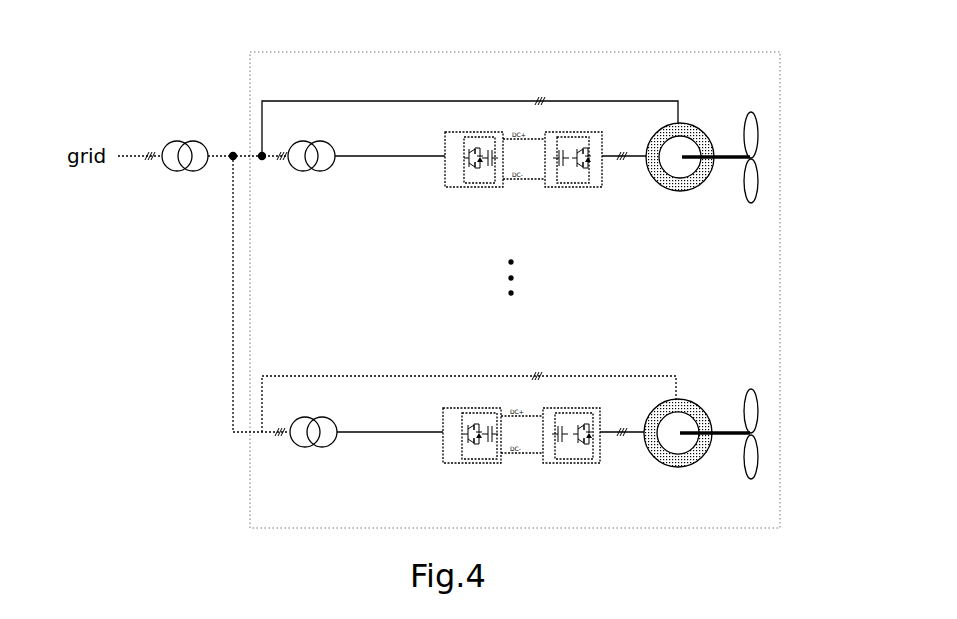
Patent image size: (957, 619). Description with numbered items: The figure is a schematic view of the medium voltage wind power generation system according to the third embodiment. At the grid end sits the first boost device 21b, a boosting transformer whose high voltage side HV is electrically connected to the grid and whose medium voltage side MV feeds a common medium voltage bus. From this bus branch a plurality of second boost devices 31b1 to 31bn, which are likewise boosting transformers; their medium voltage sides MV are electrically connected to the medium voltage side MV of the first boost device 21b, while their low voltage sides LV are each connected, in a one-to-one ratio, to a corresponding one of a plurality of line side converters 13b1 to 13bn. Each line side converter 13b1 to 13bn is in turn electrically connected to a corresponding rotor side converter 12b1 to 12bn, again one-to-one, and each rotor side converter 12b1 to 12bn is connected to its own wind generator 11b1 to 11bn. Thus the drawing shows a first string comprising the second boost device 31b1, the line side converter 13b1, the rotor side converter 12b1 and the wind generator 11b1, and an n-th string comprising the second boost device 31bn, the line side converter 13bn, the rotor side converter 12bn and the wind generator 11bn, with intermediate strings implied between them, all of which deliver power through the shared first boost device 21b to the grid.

The first boost device 21b is at (186, 142).
The second boost device 31b1 is at (313, 142).
The line side converter 13b1 is at (455, 133).
The rotor side converter 12b1 is at (572, 132).
The wind generator 11b1 is at (700, 128).
The second boost device 31bn is at (313, 418).
The line side converter 13bn is at (447, 408).
The rotor side converter 12bn is at (560, 408).
The wind generator 11bn is at (700, 403).